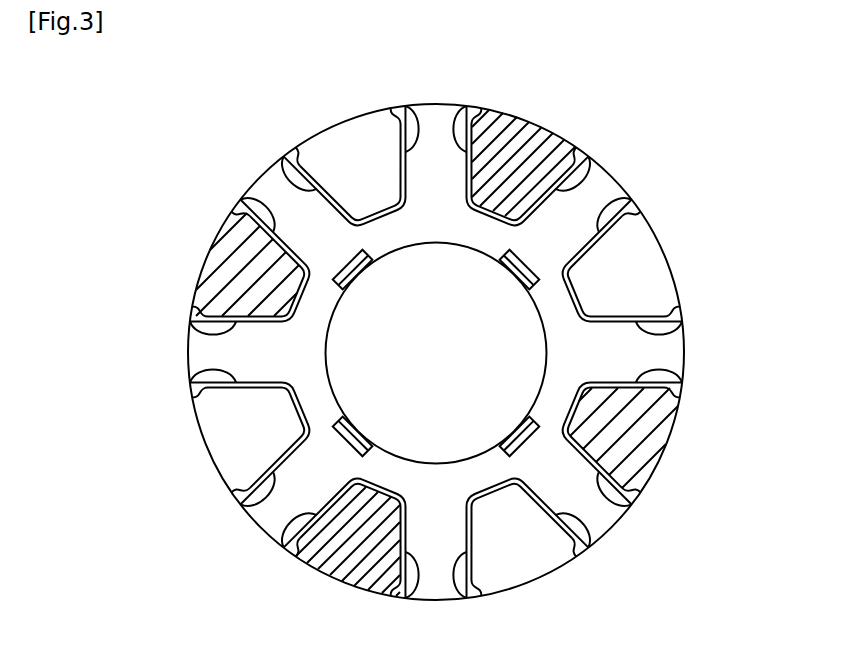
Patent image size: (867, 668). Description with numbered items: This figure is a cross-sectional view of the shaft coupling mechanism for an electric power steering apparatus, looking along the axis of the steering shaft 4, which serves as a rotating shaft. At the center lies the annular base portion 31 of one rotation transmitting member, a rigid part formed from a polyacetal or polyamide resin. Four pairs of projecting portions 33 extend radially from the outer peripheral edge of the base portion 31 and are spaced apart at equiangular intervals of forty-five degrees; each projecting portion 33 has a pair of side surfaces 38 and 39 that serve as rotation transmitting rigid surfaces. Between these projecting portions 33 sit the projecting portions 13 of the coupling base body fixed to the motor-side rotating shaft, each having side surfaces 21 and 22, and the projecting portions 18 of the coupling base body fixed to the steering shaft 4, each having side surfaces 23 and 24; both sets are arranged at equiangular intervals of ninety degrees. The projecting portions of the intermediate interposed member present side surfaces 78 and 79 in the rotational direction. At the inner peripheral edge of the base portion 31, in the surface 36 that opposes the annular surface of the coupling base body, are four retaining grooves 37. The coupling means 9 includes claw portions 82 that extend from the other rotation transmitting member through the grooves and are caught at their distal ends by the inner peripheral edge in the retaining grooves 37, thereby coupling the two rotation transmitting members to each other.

The steering shaft 4 is at (425, 368).
The coupling means 9 is at (519, 400).
The projecting portions 13 is at (518, 138).
The projecting portions 18 is at (352, 150).
The side surface 21 is at (466, 112).
The side surface 22 is at (590, 190).
The side surface 23 is at (404, 112).
The side surface 24 is at (622, 218).
The annular base portion 31 is at (317, 354).
The projecting portions 33 is at (434, 137).
The surface 36 is at (433, 230).
The retaining grooves 37 is at (360, 273).
The side surface 38 is at (474, 140).
The side surface 39 is at (400, 135).
The side surface 78 is at (664, 392).
The side surface 79 is at (662, 306).
The claw portions 82 is at (352, 283).